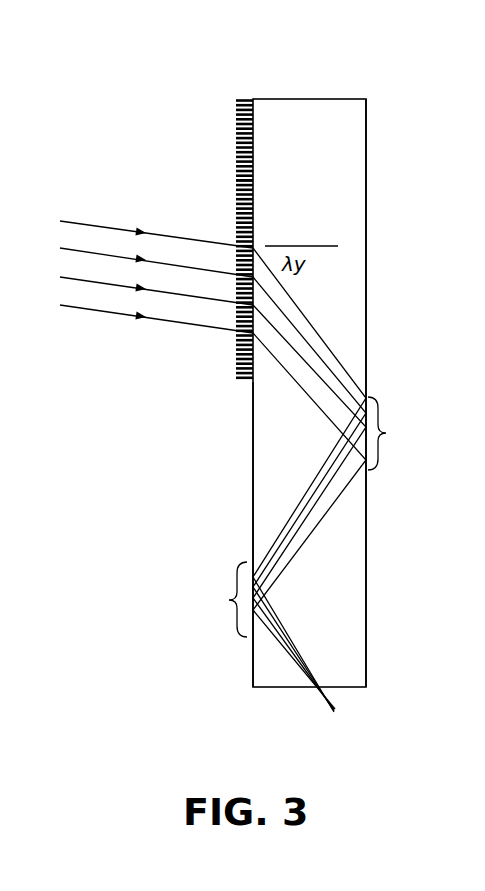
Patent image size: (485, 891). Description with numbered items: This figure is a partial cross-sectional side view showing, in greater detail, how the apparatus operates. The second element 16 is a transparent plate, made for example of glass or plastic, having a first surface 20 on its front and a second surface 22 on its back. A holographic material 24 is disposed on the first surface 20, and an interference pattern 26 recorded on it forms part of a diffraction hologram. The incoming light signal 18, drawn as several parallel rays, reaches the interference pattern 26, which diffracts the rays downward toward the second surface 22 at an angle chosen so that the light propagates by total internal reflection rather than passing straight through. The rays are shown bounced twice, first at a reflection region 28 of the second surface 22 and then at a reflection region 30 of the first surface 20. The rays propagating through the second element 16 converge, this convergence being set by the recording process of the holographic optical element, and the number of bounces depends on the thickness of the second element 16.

The second element 16 is at (343, 185).
The light signal 18 is at (144, 277).
The first surface 20 is at (245, 494).
The second surface 22 is at (374, 274).
The holographic material 24 is at (243, 100).
The interference pattern 26 is at (232, 173).
The reflection region 28 is at (392, 433).
The reflection region 30 is at (222, 599).